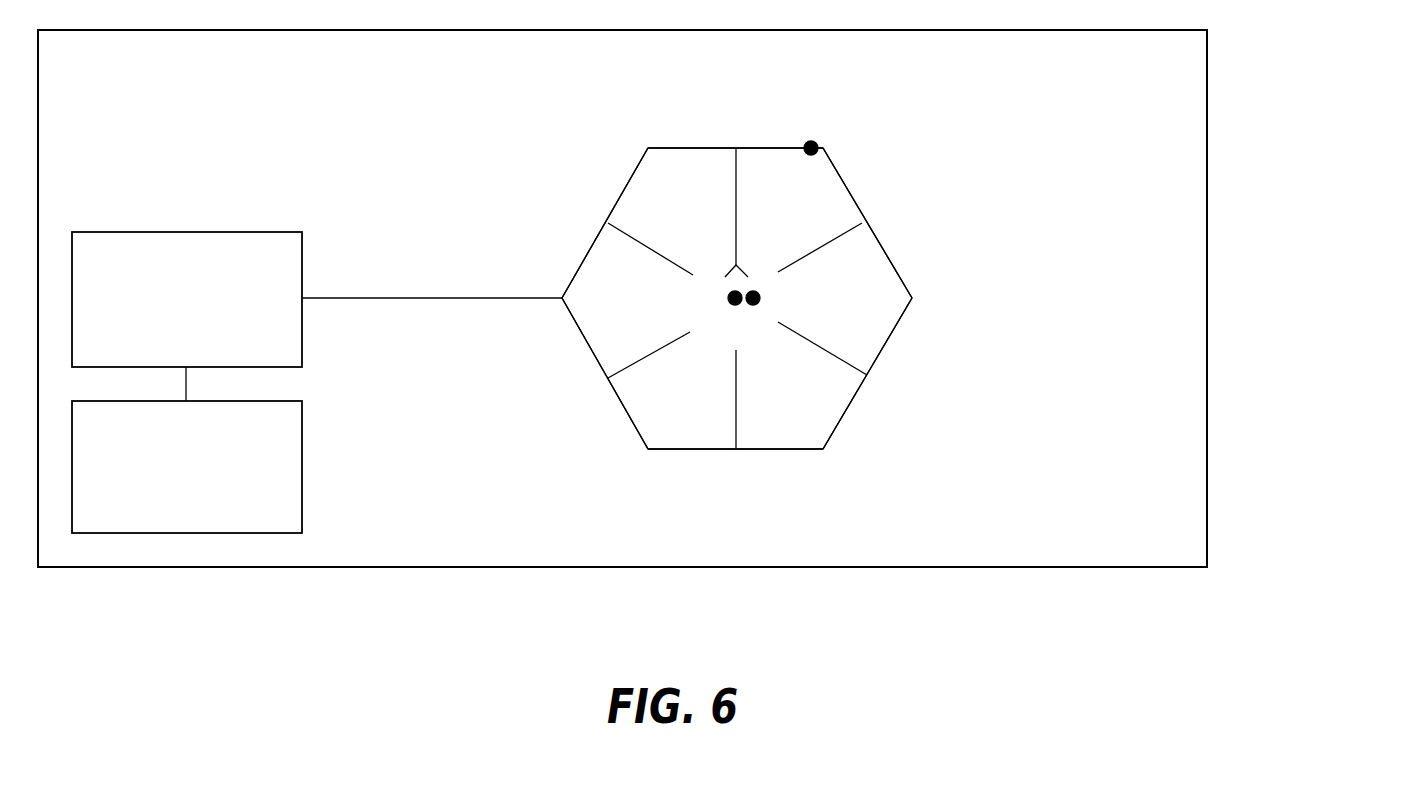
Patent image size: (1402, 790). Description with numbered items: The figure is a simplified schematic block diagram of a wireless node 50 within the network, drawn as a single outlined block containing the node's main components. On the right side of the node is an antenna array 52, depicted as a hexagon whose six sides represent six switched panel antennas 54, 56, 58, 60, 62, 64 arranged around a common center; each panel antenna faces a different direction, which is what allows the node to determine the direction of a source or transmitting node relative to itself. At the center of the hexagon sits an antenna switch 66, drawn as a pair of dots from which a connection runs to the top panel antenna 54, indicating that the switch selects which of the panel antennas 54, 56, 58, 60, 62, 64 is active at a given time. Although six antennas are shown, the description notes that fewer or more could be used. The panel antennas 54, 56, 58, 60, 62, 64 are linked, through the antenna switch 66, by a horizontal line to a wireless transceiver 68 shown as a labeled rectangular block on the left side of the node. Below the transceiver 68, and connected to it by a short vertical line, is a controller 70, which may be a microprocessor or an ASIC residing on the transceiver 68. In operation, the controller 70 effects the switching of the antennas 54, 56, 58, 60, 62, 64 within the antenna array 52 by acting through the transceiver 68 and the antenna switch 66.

The wireless node 50 is at (1235, 238).
The antenna array 52 is at (811, 148).
The switched panel antenna 54 is at (720, 135).
The switched panel antenna 56 is at (880, 207).
The switched panel antenna 58 is at (880, 388).
The switched panel antenna 60 is at (722, 470).
The switched panel antenna 62 is at (582, 387).
The switched panel antenna 64 is at (590, 205).
The antenna switch 66 is at (753, 298).
The wireless transceiver 68 is at (185, 232).
The controller 70 is at (307, 453).